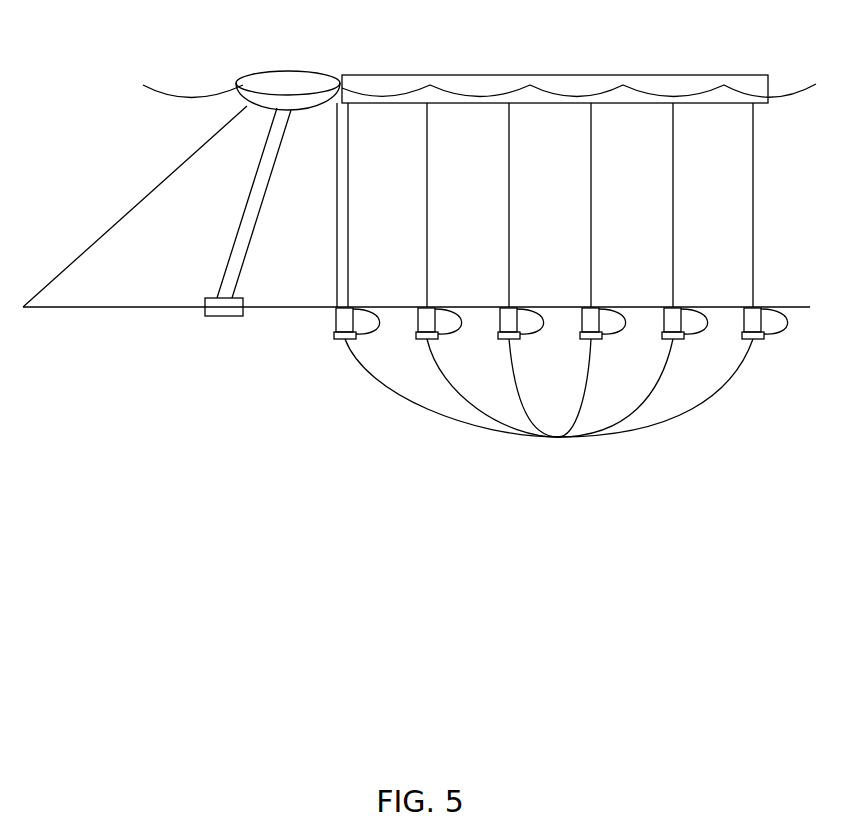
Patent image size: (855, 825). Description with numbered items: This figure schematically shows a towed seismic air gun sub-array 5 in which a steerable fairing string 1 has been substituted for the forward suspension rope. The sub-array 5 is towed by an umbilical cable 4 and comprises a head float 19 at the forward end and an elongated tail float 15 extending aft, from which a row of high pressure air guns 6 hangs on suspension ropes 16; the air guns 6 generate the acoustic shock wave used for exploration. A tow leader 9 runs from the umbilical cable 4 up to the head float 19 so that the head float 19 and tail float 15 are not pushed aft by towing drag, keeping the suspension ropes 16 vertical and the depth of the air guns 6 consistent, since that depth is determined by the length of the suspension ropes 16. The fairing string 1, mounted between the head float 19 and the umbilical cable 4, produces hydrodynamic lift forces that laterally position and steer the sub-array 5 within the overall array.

The fairing string 1 is at (222, 274).
The umbilical cable 4 is at (105, 309).
The air gun sub-array 5 is at (134, 127).
The air guns 6 is at (549, 404).
The tow leader 9 is at (130, 210).
The tail float 15 is at (548, 74).
The suspension ropes 16 is at (510, 150).
The head float 19 is at (290, 70).